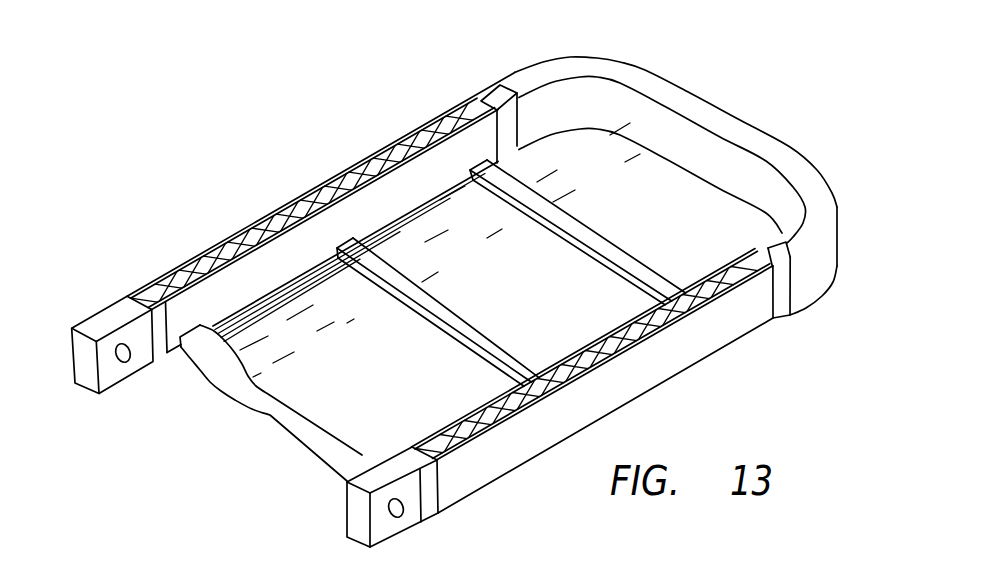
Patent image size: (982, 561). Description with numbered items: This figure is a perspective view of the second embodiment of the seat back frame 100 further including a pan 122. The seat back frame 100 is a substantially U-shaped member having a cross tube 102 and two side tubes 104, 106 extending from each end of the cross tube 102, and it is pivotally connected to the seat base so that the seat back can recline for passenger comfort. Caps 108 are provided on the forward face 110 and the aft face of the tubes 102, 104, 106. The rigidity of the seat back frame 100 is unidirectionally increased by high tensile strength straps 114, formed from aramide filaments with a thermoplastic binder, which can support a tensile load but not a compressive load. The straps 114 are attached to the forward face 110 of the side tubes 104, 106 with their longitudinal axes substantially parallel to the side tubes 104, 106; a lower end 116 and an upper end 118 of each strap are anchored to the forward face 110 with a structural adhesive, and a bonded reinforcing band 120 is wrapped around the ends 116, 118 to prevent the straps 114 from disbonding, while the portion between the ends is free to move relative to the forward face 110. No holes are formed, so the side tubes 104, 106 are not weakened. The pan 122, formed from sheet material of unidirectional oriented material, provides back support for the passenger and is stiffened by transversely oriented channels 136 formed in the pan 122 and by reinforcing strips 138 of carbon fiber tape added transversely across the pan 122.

The seat back frame 100 is at (186, 459).
The cross tube 102 is at (783, 144).
The side tube 104 is at (686, 370).
The side tube 106 is at (310, 191).
The caps 108 is at (660, 88).
The forward face 110 is at (720, 121).
The straps 114 is at (343, 188).
The lower end 116 is at (193, 271).
The upper end 118 is at (468, 108).
The reinforcing band 120 is at (147, 298).
The pan 122 is at (320, 402).
The channels 136 is at (388, 285).
The reinforcing strips 138 is at (454, 346).